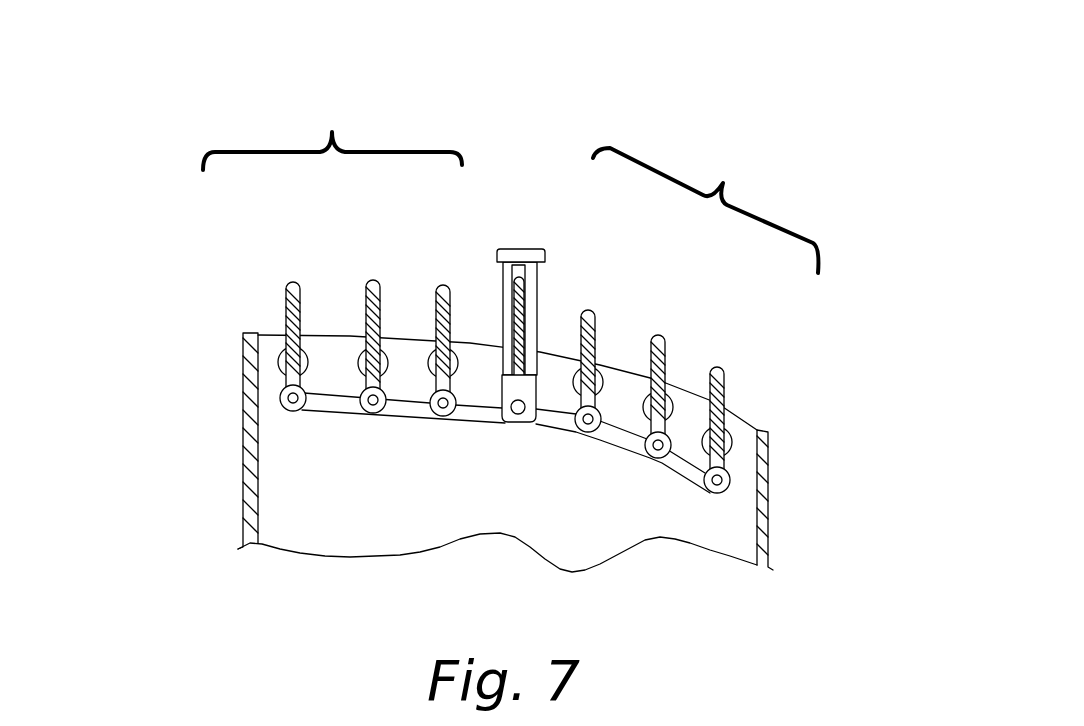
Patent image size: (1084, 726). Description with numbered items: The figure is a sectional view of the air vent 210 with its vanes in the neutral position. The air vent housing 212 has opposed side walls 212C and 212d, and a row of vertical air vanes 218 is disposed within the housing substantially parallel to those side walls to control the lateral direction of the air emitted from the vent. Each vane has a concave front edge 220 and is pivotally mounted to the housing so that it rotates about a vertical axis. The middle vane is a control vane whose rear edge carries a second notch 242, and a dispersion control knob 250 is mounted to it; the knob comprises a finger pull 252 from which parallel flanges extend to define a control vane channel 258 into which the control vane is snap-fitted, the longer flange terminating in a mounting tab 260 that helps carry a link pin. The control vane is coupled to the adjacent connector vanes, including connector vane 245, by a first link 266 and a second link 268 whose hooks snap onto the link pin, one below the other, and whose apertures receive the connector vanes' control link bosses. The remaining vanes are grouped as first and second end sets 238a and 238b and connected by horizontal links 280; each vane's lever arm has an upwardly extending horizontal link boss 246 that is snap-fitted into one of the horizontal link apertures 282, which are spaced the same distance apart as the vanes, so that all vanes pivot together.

The air vent 210 is at (713, 118).
The housing 212 is at (773, 470).
The side wall 212C is at (768, 522).
The side wall 212d is at (214, 441).
The vertical air vanes 218 is at (283, 285).
The front edge 220 is at (507, 279).
The first end set 238a is at (705, 210).
The second end set 238b is at (332, 134).
The second notch 242 is at (533, 360).
The connector vane 245 is at (592, 297).
The horizontal link boss 246 is at (443, 414).
The dispersion control knob 250 is at (523, 243).
The finger pull 252 is at (544, 326).
The control vane channel 258 is at (520, 277).
The mounting tab 260 is at (507, 425).
The first link 266 is at (558, 427).
The second link 268 is at (470, 423).
The horizontal links 280 is at (404, 407).
The horizontal link apertures 282 is at (447, 423).